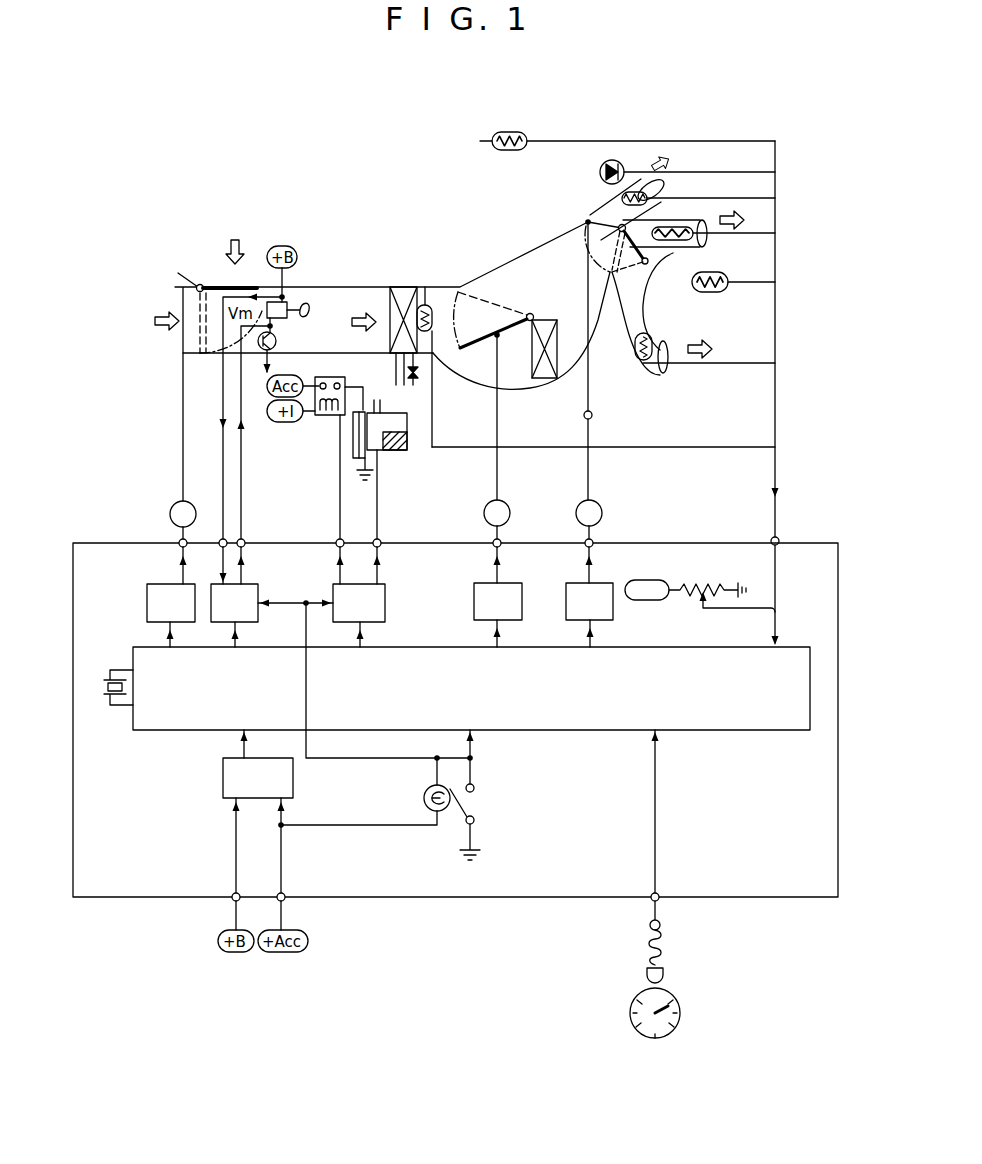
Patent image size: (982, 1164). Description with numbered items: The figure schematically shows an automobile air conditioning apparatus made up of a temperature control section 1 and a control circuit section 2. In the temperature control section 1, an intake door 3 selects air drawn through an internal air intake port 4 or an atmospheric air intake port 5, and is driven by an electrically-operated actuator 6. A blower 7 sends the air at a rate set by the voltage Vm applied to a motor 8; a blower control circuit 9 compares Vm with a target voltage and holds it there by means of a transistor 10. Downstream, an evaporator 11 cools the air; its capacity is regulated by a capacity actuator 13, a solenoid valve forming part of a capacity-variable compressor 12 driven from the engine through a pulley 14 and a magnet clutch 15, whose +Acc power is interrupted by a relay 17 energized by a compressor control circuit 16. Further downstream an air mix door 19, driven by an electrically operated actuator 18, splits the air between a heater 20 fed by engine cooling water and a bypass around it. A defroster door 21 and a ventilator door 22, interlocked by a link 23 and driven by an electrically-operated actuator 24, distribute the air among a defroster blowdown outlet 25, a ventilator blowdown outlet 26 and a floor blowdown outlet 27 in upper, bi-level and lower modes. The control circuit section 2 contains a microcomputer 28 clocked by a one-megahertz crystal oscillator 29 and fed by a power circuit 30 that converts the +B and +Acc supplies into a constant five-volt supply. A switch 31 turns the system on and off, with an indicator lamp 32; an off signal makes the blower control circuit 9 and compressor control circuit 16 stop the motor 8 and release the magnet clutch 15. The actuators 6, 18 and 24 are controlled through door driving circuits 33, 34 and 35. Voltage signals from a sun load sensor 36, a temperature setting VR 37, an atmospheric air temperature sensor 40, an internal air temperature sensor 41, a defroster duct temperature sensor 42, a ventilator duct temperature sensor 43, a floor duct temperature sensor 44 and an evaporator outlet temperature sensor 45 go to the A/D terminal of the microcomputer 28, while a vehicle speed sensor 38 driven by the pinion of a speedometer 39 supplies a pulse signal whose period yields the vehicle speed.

The temperature control section 1 is at (344, 286).
The control circuit section 2 is at (100, 541).
The intake door 3 is at (213, 286).
The internal air intake port 4 is at (163, 331).
The atmospheric air intake port 5 is at (244, 238).
The electrically-operated actuator 6 is at (175, 503).
The blower 7 is at (311, 306).
The motor 8 is at (289, 301).
The blower control circuit 9 is at (256, 583).
The transistor 10 is at (276, 343).
The evaporator 11 is at (400, 285).
The capacity-variable compressor 12 is at (408, 418).
The capacity actuator 13 is at (399, 452).
The pulley 14 is at (352, 440).
The magnet clutch 15 is at (360, 470).
The compressor control circuit 16 is at (385, 586).
The relay 17 is at (322, 417).
The electrically operated actuator 18 is at (505, 504).
The air mix door 19 is at (478, 350).
The heater 20 is at (553, 318).
The defroster door 21 is at (585, 221).
The ventilator door 22 is at (654, 314).
The link 23 is at (593, 417).
The electrically-operated actuator 24 is at (597, 504).
The defroster blowdown outlet 25 is at (674, 160).
The ventilator blowdown outlet 26 is at (748, 220).
The floor blowdown outlet 27 is at (714, 349).
The microcomputer 28 is at (160, 732).
The crystal oscillator 29 is at (108, 702).
The power circuit 30 is at (294, 780).
The switch 31 is at (478, 803).
The indicator lamp 32 is at (426, 791).
The door driving circuit 33 is at (170, 583).
The door driving circuit 34 is at (512, 583).
The door driving circuit 35 is at (598, 583).
The sun load sensor 36 is at (613, 159).
The temperature setting VR 37 is at (696, 600).
The vehicle speed sensor 38 is at (668, 972).
The speedometer 39 is at (682, 1014).
The atmospheric air temperature sensor 40 is at (514, 131).
The internal air temperature sensor 41 is at (706, 294).
The defroster duct temperature sensor 42 is at (620, 197).
The ventilator duct temperature sensor 43 is at (696, 243).
The floor duct temperature sensor 44 is at (650, 366).
The evaporator outlet temperature sensor 45 is at (436, 300).